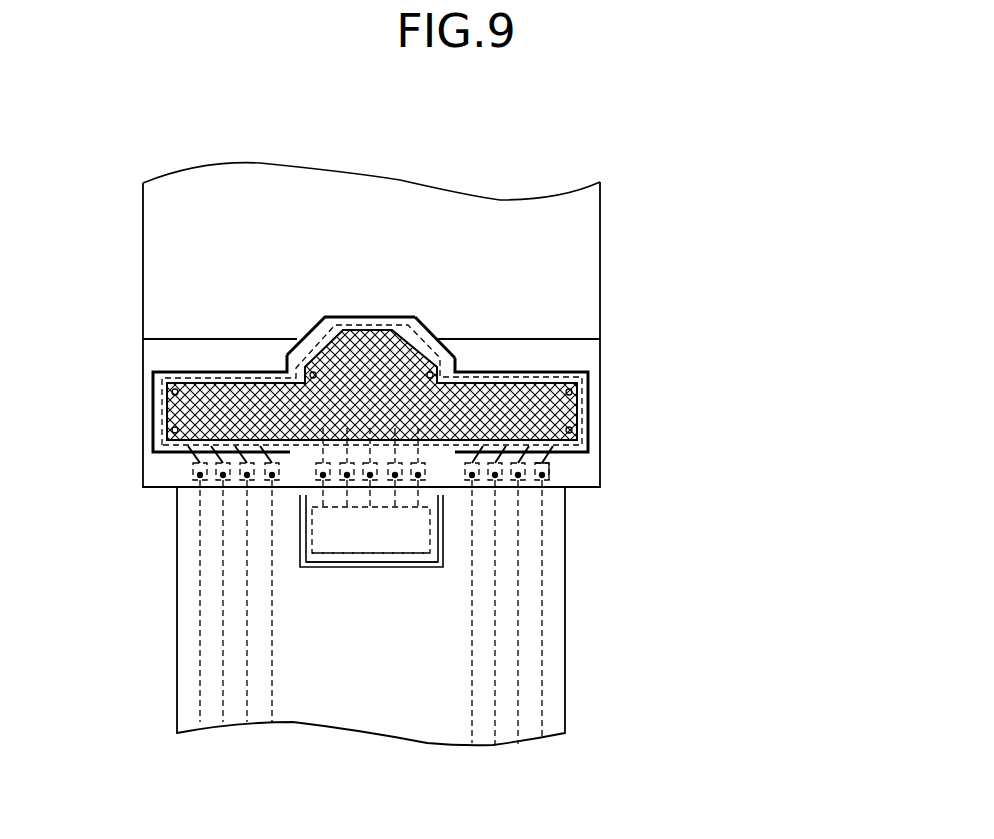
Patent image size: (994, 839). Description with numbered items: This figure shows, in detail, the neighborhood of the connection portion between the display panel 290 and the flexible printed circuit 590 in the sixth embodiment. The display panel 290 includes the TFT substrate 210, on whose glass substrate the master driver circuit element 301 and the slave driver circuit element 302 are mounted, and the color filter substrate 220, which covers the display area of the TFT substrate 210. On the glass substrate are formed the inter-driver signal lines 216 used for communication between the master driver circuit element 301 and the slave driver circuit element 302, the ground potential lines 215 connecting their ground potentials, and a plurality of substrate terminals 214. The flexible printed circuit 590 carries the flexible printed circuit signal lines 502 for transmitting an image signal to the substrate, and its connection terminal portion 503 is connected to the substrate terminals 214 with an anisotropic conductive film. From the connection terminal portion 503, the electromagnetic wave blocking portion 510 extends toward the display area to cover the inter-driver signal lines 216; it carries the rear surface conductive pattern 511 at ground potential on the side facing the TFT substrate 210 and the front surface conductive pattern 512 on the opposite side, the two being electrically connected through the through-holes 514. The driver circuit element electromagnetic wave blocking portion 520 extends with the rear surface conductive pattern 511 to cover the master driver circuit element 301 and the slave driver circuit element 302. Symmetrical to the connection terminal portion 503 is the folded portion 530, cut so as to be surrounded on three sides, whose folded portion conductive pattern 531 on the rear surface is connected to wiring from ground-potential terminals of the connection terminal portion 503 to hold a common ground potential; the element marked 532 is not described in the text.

The color filter substrate 220 is at (587, 275).
The TFT substrate 210 is at (587, 357).
The flexible printed circuit 590 is at (555, 695).
The driver circuit element electromagnetic wave blocking portion 520 is at (153, 432).
The electromagnetic wave blocking portion 510 is at (318, 327).
The front surface conductive pattern 512 is at (438, 338).
The rear surface conductive pattern 511 is at (293, 338).
The through-holes 514 is at (167, 393).
The inter-driver signal lines 216 is at (372, 327).
The master driver circuit element 301 is at (165, 415).
The slave driver circuit element 302 is at (577, 410).
The substrate terminals 214 is at (570, 462).
The flexible printed circuit signal lines 502 is at (545, 598).
The ground potential lines 215 is at (313, 460).
The driver IC housing 532 is at (300, 500).
The folded portion 530 is at (337, 560).
The folded portion conductive pattern 531 is at (390, 560).
The connection terminal portion 503 is at (433, 478).
The display panel 290 is at (716, 322).